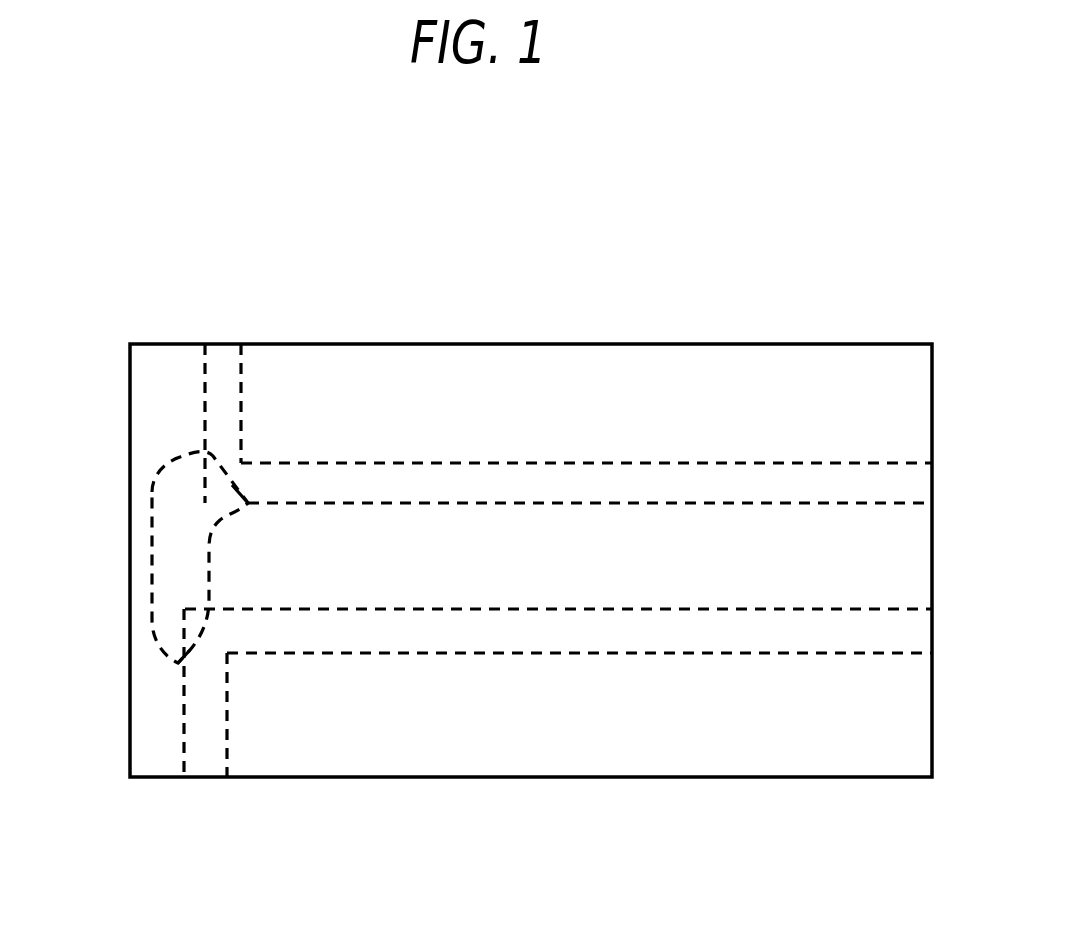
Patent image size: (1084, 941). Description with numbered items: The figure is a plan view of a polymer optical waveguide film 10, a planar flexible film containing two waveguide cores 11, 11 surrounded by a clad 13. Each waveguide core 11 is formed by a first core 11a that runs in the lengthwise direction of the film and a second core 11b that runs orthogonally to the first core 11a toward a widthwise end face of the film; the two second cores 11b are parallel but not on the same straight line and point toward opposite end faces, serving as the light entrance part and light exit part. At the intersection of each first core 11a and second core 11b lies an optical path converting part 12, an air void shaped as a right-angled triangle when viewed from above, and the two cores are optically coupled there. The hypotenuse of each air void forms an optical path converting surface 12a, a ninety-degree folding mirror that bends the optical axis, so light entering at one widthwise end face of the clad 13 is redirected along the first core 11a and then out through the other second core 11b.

The polymer optical waveguide film 10 is at (652, 224).
The waveguide core 11 is at (358, 203).
The first core 11a is at (323, 480).
The second core 11b is at (230, 353).
The optical path converting part 12 is at (205, 492).
The optical path converting surface 12a is at (244, 504).
The clad 13 is at (612, 765).